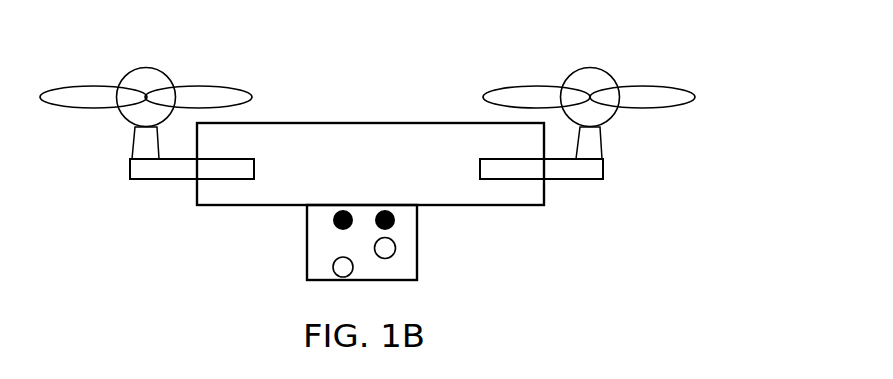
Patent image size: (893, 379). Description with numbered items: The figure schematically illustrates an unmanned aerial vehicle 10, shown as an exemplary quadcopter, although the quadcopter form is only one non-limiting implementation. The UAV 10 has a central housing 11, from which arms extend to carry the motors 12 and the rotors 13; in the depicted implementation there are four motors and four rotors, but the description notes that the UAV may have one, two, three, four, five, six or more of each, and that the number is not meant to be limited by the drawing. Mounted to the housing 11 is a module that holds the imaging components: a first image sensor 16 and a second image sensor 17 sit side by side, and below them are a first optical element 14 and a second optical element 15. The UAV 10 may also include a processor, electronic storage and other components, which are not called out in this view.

The unmanned aerial vehicle 10 is at (403, 72).
The housing 11 is at (325, 153).
The motors 12 is at (588, 145).
The rotors 13 is at (670, 90).
The first optical element 14 is at (335, 267).
The second optical element 15 is at (386, 250).
The first image sensor 16 is at (316, 219).
The second image sensor 17 is at (412, 219).